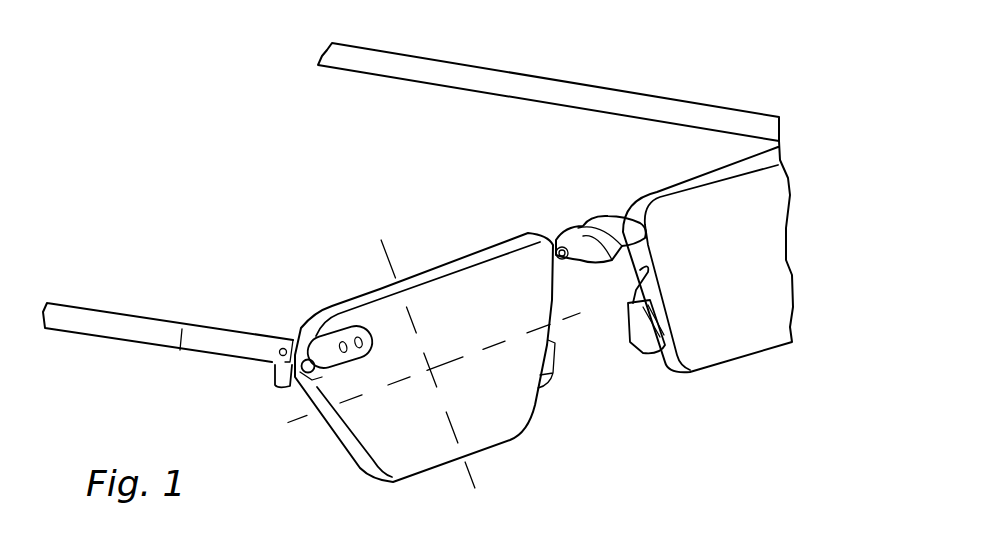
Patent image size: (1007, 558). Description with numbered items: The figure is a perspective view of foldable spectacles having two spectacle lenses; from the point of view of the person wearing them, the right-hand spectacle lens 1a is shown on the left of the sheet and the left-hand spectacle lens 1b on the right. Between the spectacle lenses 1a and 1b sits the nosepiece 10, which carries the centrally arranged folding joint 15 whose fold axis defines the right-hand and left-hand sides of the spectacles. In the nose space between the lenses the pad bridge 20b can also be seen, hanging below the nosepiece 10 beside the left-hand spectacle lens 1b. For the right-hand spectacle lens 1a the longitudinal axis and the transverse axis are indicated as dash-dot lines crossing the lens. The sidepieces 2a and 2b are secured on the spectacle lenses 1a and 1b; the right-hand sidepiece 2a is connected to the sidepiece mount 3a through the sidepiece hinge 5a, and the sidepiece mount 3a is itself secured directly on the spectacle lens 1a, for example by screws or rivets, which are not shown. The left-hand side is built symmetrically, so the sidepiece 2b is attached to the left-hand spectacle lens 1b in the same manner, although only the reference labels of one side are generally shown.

The right-hand spectacle lens 1a is at (419, 445).
The left-hand spectacle lens 1b is at (735, 325).
The sidepiece 2a is at (122, 330).
The sidepiece 2b is at (644, 110).
The sidepiece mount 3a is at (343, 345).
The sidepiece hinge 5a is at (288, 325).
The nosepiece 10 is at (582, 203).
The folding joint 15 is at (580, 225).
The pad bridge 20b is at (640, 343).